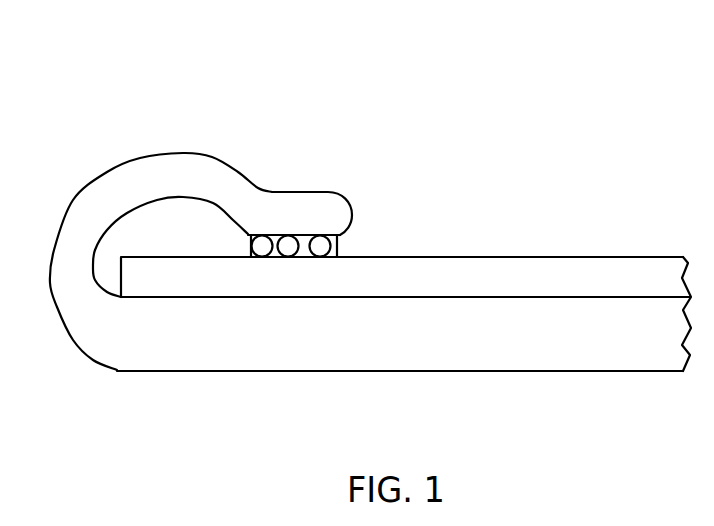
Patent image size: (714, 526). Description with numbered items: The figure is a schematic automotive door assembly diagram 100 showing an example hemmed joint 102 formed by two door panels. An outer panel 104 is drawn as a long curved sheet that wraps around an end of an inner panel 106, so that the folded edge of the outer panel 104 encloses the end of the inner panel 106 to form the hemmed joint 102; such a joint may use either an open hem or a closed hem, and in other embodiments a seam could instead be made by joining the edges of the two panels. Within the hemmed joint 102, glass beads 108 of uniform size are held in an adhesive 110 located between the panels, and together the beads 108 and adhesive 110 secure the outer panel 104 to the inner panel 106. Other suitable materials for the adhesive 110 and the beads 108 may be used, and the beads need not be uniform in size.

The automotive door assembly diagram 100 is at (82, 125).
The hemmed joint 102 is at (258, 272).
The outer panel 104 is at (455, 372).
The inner panel 106 is at (570, 265).
The glass beads 108 is at (250, 250).
The adhesive 110 is at (302, 248).